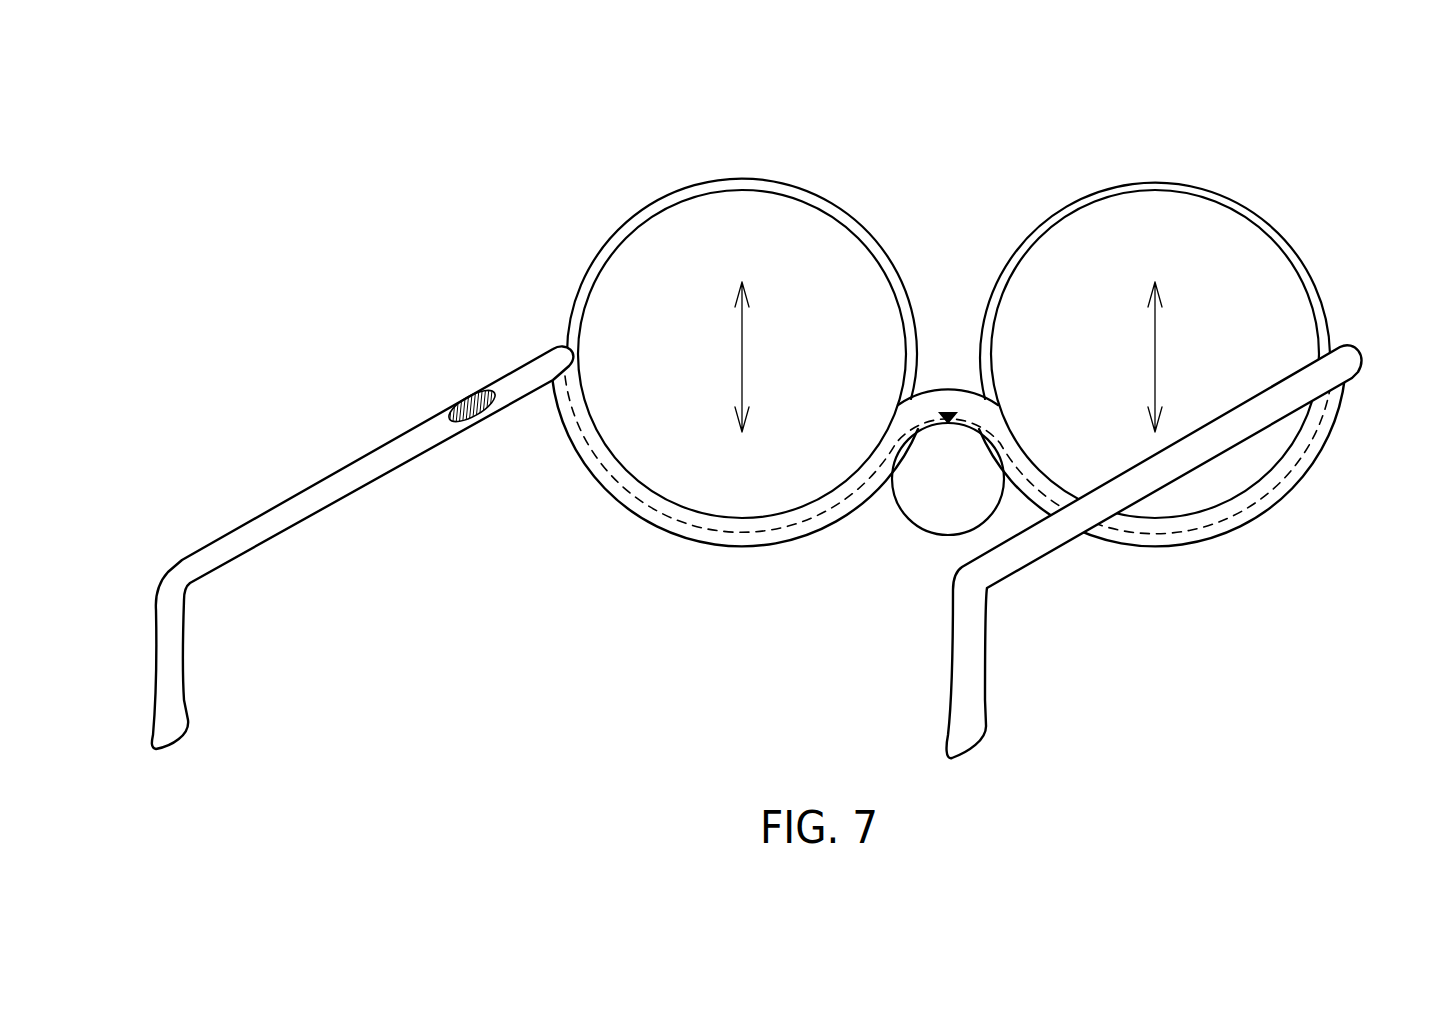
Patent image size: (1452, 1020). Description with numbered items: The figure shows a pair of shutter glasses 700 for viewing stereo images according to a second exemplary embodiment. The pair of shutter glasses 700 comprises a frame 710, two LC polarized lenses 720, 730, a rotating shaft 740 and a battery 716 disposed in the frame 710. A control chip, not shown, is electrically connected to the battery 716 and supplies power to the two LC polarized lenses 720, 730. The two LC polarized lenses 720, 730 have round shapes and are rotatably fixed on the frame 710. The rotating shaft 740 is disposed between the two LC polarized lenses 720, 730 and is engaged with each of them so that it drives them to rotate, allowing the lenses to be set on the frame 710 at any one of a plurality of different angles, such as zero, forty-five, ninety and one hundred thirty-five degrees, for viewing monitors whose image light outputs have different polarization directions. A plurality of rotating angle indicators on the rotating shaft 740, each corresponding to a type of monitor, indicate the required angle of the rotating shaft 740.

The pair of shutter glasses 700 is at (792, 426).
The frame 710 is at (285, 510).
The battery 716 is at (478, 392).
The LC polarized lens 720 is at (745, 247).
The LC polarized lens 730 is at (1172, 245).
The rotating shaft 740 is at (913, 495).